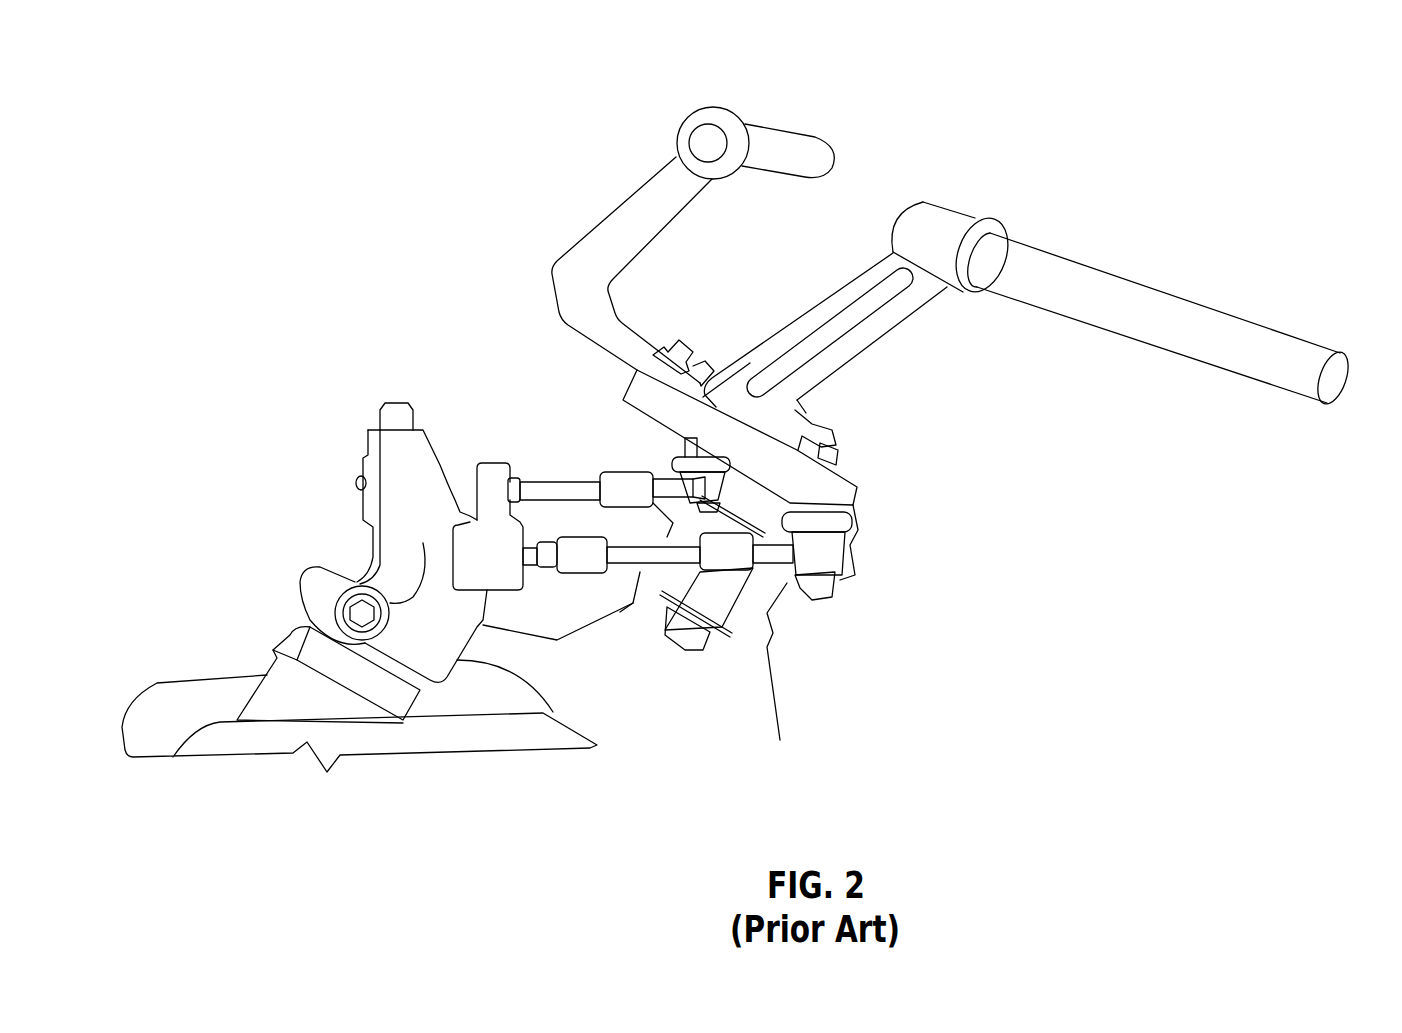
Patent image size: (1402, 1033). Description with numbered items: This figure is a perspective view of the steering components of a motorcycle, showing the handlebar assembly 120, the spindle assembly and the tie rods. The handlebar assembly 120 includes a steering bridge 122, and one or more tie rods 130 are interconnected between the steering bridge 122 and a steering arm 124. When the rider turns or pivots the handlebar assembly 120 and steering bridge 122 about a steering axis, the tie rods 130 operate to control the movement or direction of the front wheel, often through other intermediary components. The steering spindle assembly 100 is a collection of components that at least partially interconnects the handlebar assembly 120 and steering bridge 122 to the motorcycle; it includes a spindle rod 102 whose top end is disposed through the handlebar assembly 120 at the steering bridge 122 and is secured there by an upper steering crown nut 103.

The steering spindle assembly 100 is at (747, 593).
The spindle rod 102 is at (820, 427).
The steering crown nut 103 is at (823, 447).
The handlebar assembly 120 is at (617, 172).
The steering bridge 122 is at (820, 490).
The steering arm 124 is at (397, 467).
The tie rods 130 is at (622, 555).